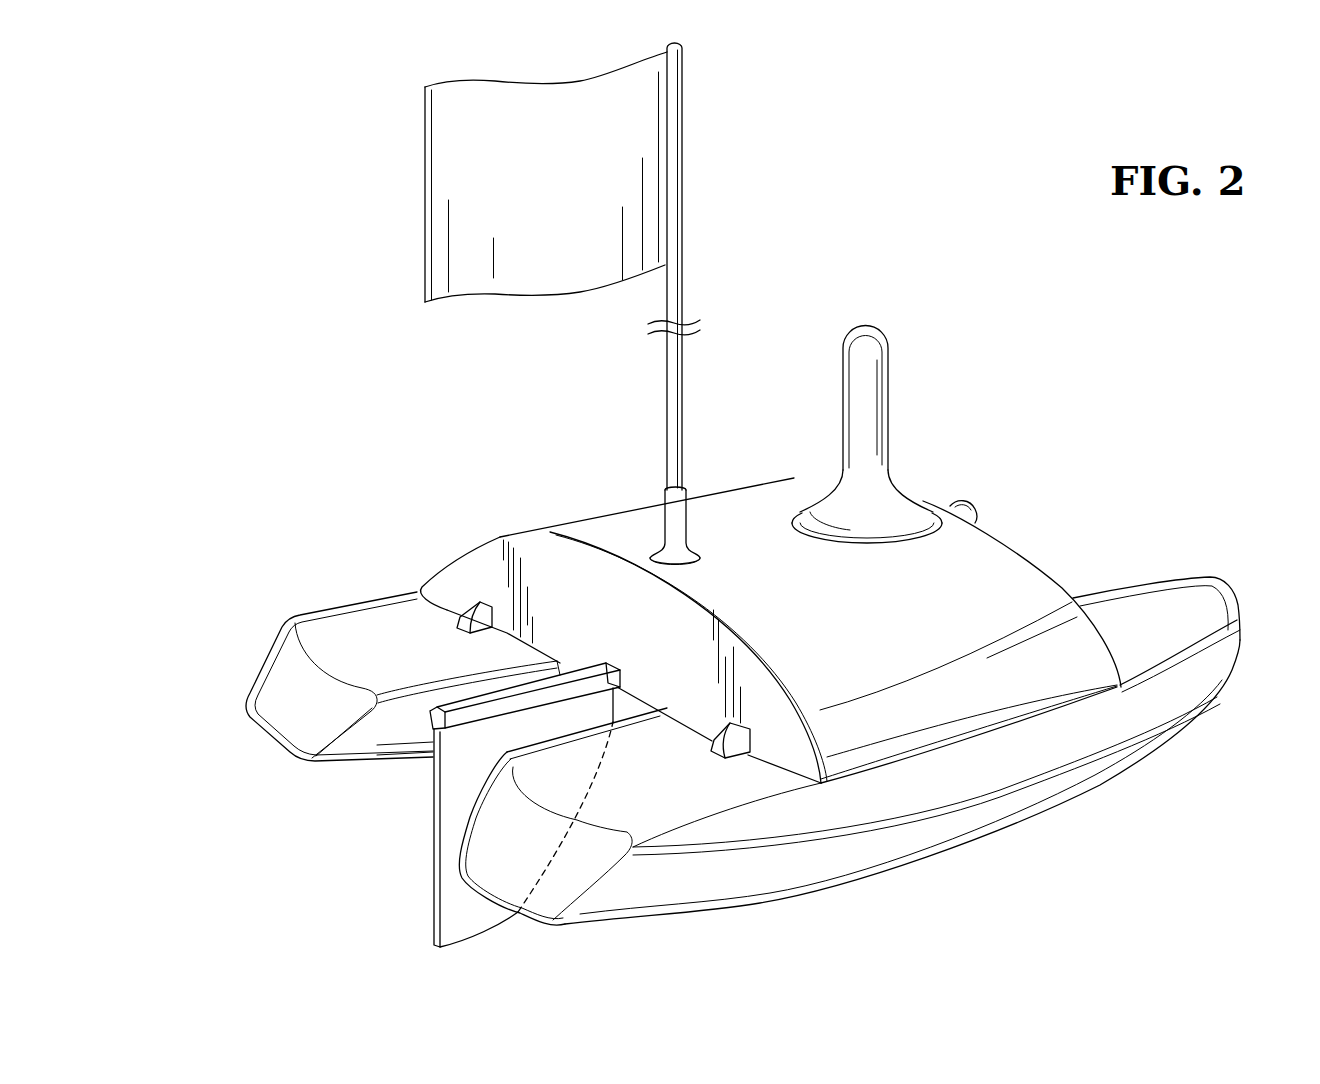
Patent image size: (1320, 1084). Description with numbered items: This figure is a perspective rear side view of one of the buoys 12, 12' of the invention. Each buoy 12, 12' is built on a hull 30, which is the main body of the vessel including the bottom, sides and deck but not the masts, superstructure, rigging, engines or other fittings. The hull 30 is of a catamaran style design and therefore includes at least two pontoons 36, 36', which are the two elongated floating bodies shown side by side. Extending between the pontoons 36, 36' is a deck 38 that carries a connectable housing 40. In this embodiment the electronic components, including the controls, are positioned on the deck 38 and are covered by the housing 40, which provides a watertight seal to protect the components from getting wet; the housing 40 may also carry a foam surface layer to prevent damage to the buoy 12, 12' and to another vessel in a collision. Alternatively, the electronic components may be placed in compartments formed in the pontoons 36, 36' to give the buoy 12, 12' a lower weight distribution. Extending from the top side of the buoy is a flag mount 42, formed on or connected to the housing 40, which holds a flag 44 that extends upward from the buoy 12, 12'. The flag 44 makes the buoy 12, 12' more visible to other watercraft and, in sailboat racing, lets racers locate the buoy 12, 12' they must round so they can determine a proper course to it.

The buoy 12 is at (700, 504).
The buoy 12' is at (700, 504).
The hull 30 is at (254, 548).
The pontoon 36 is at (403, 653).
The pontoon 36' is at (849, 771).
The deck 38 is at (447, 607).
The housing 40 is at (970, 580).
The flag mount 42 is at (671, 525).
The flag 44 is at (446, 163).